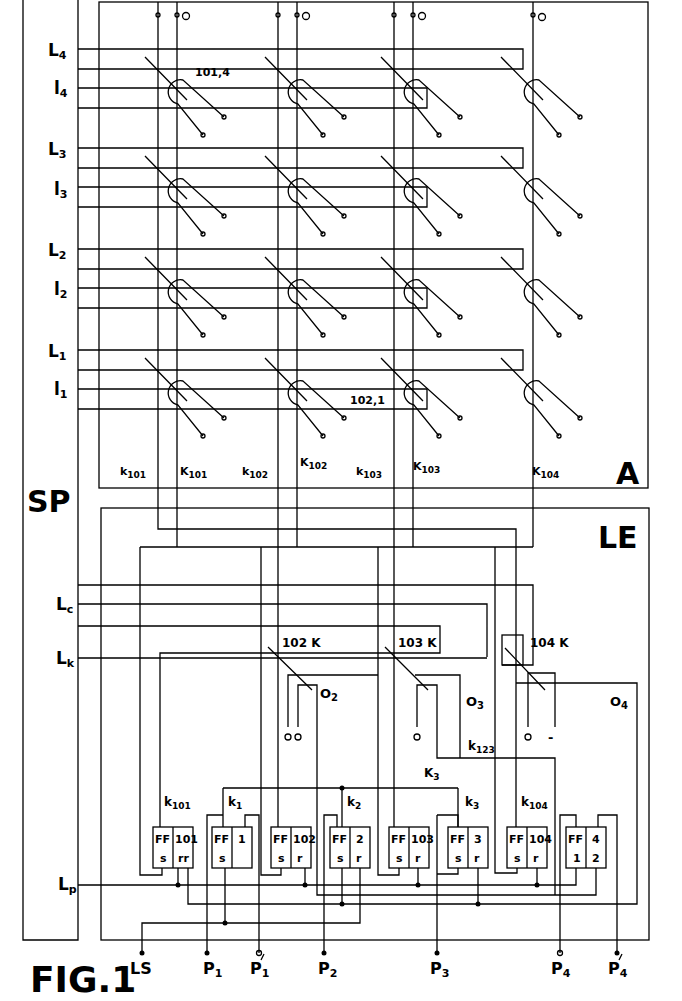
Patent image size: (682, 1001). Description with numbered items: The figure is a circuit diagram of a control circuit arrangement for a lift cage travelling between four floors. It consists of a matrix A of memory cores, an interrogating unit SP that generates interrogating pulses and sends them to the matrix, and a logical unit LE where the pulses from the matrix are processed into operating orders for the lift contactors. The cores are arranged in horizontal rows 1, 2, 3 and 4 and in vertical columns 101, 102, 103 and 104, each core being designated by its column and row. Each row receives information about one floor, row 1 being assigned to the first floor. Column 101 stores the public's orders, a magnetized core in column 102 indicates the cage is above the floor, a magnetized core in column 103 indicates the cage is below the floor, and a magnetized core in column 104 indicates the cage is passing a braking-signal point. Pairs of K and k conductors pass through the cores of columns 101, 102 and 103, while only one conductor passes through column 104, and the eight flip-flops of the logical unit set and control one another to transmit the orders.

The matrix column 101 is at (329, 413).
The matrix column 102 is at (322, 413).
The matrix column 103 is at (438, 413).
The matrix column 104 is at (559, 273).
The matrix row 1 is at (357, 379).
The matrix row 2 is at (357, 278).
The matrix row 3 is at (357, 177).
The matrix row 4 is at (357, 78).